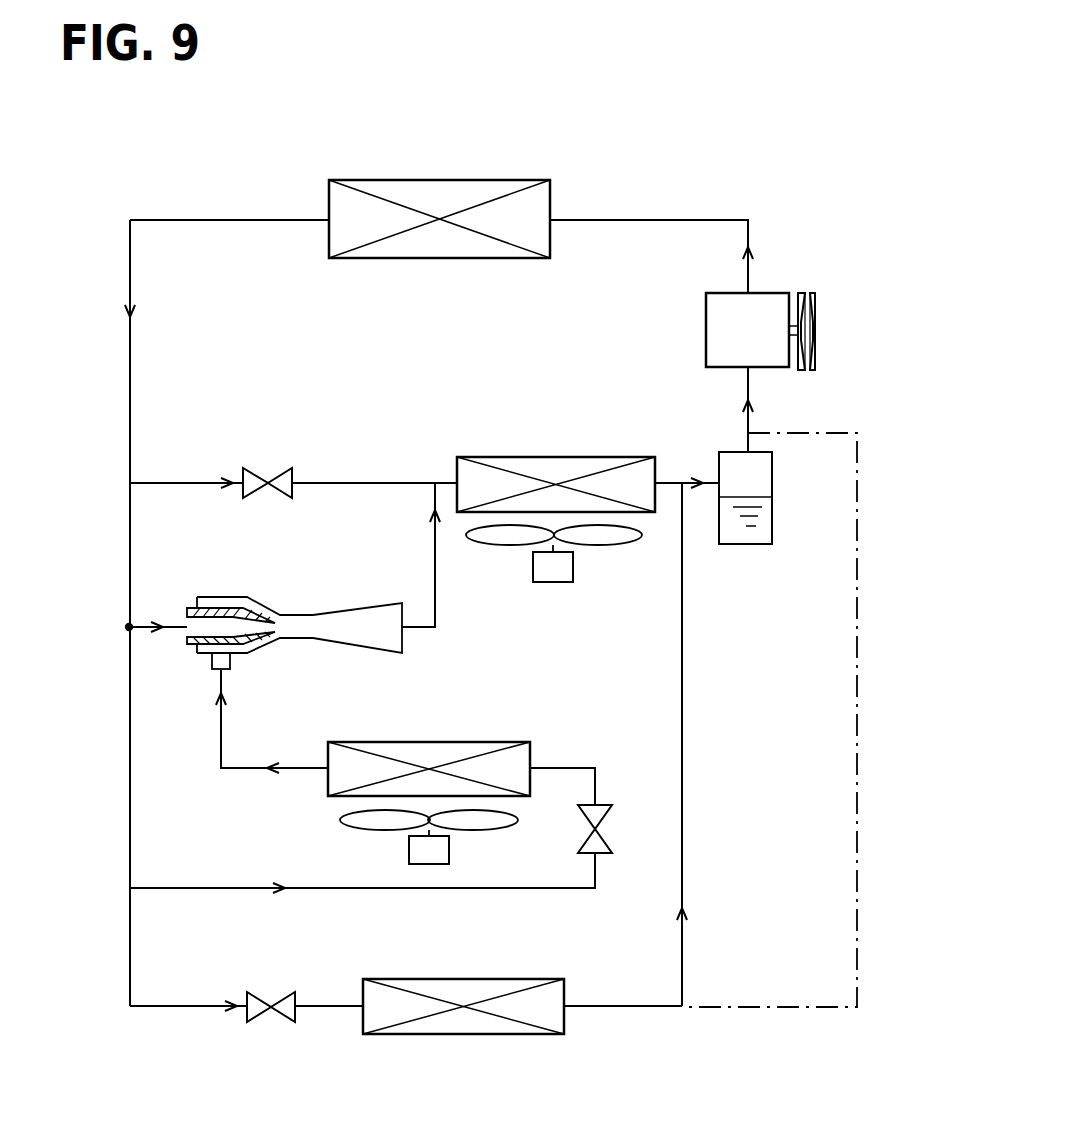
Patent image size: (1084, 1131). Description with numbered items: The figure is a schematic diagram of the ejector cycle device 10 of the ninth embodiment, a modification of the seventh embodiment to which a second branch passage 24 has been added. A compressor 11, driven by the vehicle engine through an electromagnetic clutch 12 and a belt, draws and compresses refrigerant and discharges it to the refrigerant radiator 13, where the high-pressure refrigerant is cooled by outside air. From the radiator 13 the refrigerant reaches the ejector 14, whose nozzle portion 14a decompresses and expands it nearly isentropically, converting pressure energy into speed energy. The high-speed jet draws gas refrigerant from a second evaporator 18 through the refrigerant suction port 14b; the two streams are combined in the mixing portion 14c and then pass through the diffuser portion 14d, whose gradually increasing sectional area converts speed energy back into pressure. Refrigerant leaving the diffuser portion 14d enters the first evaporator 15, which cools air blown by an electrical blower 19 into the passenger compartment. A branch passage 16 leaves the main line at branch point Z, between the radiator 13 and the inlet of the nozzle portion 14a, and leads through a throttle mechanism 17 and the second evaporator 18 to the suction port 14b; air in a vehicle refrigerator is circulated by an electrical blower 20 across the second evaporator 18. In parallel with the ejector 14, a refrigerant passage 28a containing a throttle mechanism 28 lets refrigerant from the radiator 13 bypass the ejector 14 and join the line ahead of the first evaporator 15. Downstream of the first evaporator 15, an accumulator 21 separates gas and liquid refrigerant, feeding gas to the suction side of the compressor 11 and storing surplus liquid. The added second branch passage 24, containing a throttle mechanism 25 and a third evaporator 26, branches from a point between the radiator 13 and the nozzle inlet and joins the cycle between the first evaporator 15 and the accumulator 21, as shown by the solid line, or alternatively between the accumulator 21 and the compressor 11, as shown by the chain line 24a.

The ejector cycle device 10 is at (628, 190).
The compressor 11 is at (775, 293).
The electromagnetic clutch 12 is at (818, 297).
The refrigerant radiator 13 is at (505, 180).
The ejector 14 is at (295, 621).
The nozzle portion 14a is at (238, 608).
The refrigerant suction port 14b is at (213, 655).
The mixing portion 14c is at (306, 615).
The diffuser portion 14d is at (389, 608).
The first evaporator 15 is at (612, 457).
The branch passage 16 is at (170, 890).
The throttle mechanism 17 is at (612, 845).
The second evaporator 18 is at (370, 742).
The electrical blower 19 is at (640, 540).
The electrical blower 20 is at (515, 826).
The accumulator 21 is at (772, 473).
The second branch passage 24 is at (170, 1008).
The chain line 24a is at (858, 647).
The throttle mechanism 25 is at (263, 992).
The third evaporator 26 is at (406, 979).
The throttle mechanism 28 is at (285, 468).
The refrigerant passage 28a is at (195, 483).
The branch point Z is at (129, 627).